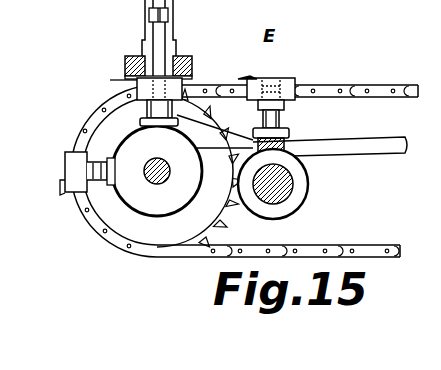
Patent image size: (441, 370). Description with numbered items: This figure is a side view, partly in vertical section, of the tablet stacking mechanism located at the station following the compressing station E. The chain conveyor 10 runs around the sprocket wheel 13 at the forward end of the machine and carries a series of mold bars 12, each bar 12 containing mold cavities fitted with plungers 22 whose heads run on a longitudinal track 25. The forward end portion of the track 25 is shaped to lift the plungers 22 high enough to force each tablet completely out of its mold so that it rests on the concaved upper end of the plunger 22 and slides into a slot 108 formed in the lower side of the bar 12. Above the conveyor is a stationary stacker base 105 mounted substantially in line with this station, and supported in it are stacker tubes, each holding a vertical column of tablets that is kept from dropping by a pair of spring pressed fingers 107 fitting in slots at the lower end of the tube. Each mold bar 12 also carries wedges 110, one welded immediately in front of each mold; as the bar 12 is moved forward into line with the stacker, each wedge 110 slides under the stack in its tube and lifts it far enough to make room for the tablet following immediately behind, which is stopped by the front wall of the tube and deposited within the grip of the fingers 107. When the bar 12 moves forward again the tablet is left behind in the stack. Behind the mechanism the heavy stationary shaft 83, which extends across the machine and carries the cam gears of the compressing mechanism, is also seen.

The chain conveyor 10 is at (403, 87).
The mold bar 12 is at (137, 87).
The sprocket wheel 13 is at (107, 217).
The plunger 22 is at (280, 117).
The track 25 is at (385, 143).
The stationary shaft 83 is at (283, 188).
The stacker base 105 is at (130, 66).
The spring pressed fingers 107 is at (155, 35).
The slot 108 is at (187, 81).
The wedge 110 is at (63, 187).